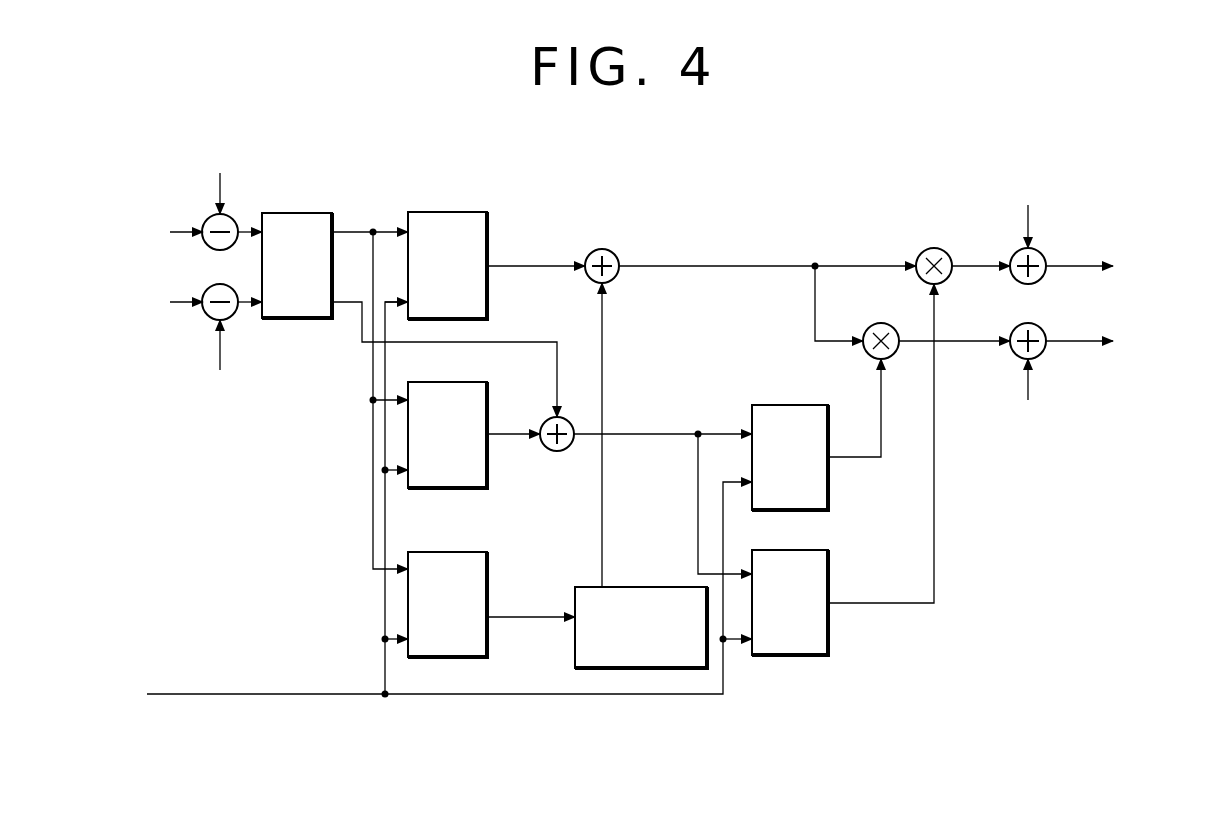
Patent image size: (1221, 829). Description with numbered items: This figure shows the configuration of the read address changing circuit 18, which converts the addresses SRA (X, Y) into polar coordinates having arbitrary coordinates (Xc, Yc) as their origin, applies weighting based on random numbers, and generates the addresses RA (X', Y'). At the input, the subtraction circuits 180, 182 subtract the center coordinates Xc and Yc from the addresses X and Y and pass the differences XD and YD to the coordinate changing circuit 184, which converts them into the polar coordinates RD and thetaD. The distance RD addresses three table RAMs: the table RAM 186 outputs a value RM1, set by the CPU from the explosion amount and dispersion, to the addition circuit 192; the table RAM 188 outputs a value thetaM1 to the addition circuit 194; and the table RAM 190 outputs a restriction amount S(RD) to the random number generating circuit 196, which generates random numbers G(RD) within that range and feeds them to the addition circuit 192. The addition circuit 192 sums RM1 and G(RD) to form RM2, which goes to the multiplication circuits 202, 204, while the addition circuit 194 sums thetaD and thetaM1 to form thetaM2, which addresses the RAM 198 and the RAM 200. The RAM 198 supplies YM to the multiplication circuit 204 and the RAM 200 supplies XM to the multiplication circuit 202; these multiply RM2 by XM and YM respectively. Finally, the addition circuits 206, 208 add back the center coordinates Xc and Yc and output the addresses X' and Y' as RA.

The read address changing circuit 18 is at (764, 784).
The subtraction circuit 180 is at (231, 220).
The subtraction circuit 182 is at (208, 316).
The coordinate changing circuit 184 is at (300, 213).
The table RAM 186 is at (450, 212).
The table RAM 188 is at (487, 395).
The table RAM 190 is at (487, 566).
The addition circuit 192 is at (607, 250).
The addition circuit 194 is at (560, 452).
The random number generating circuit 196 is at (625, 587).
The RAM 198 is at (790, 405).
The RAM 200 is at (800, 550).
The multiplication circuit 202 is at (922, 252).
The multiplication circuit 204 is at (869, 327).
The addition circuit 206 is at (1041, 279).
The addition circuit 208 is at (1041, 355).